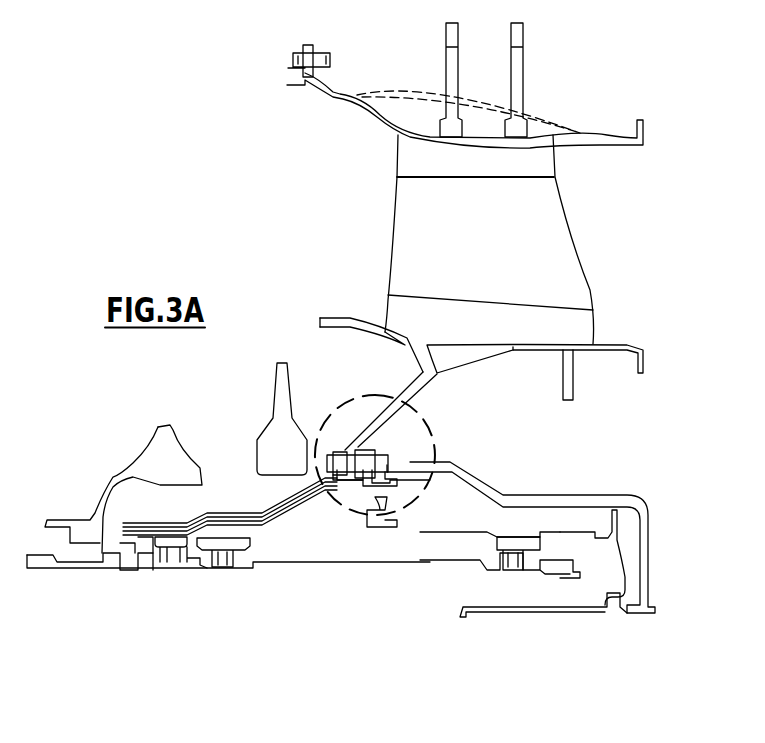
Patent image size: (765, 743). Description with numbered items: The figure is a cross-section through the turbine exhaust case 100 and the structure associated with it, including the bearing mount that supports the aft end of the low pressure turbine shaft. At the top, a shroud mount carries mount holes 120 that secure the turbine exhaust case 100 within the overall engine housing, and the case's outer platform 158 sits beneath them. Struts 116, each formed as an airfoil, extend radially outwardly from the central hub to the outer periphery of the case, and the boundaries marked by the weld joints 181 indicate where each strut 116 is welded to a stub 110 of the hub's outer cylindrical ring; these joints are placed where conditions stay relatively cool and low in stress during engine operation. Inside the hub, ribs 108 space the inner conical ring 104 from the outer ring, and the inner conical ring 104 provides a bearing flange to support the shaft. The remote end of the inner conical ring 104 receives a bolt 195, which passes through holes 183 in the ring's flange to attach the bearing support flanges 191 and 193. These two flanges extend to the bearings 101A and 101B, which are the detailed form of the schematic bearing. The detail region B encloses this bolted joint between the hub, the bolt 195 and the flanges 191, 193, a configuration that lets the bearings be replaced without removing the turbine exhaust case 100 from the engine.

The turbine exhaust case 100 is at (593, 102).
The inner conical ring 104 is at (370, 420).
The ribs 108 is at (445, 362).
The stubs 110 is at (573, 323).
The struts 116 is at (407, 236).
The mount holes 120 is at (446, 48).
The outer platform 158 is at (540, 160).
The weld joint 181 is at (397, 177).
The holes 183 is at (327, 427).
The bearing support flange 191 is at (357, 490).
The bearing support flange 193 is at (520, 544).
The bolt 195 is at (385, 453).
The bearing 101A is at (222, 558).
The bearing 101B is at (515, 557).
The detail region B is at (425, 427).